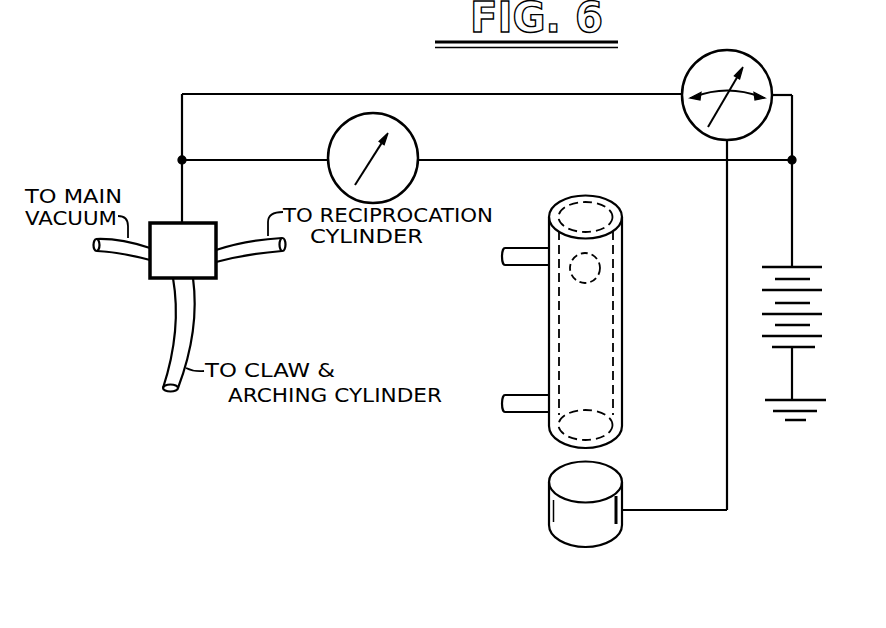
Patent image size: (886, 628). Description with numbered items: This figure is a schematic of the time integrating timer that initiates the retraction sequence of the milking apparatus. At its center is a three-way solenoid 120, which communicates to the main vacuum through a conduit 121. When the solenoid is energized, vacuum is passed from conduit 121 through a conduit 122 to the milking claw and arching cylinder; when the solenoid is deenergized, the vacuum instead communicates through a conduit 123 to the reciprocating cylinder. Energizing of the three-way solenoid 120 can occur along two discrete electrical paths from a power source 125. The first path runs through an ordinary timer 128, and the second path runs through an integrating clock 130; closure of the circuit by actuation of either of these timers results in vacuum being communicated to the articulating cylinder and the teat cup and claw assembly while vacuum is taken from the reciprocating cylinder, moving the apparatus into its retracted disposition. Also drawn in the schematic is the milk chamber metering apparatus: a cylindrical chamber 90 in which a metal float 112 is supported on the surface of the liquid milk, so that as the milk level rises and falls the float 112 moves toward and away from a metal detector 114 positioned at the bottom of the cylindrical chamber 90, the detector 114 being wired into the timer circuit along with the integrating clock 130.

The cylindrical chamber 90 is at (622, 375).
The metal float 112 is at (592, 268).
The metal detector 114 is at (622, 480).
The three-way solenoid 120 is at (202, 258).
The conduit 121 is at (114, 259).
The conduit 122 is at (199, 331).
The conduit 123 is at (245, 266).
The power source 125 is at (810, 260).
The ordinary timer 128 is at (410, 132).
The integrating clock 130 is at (727, 50).